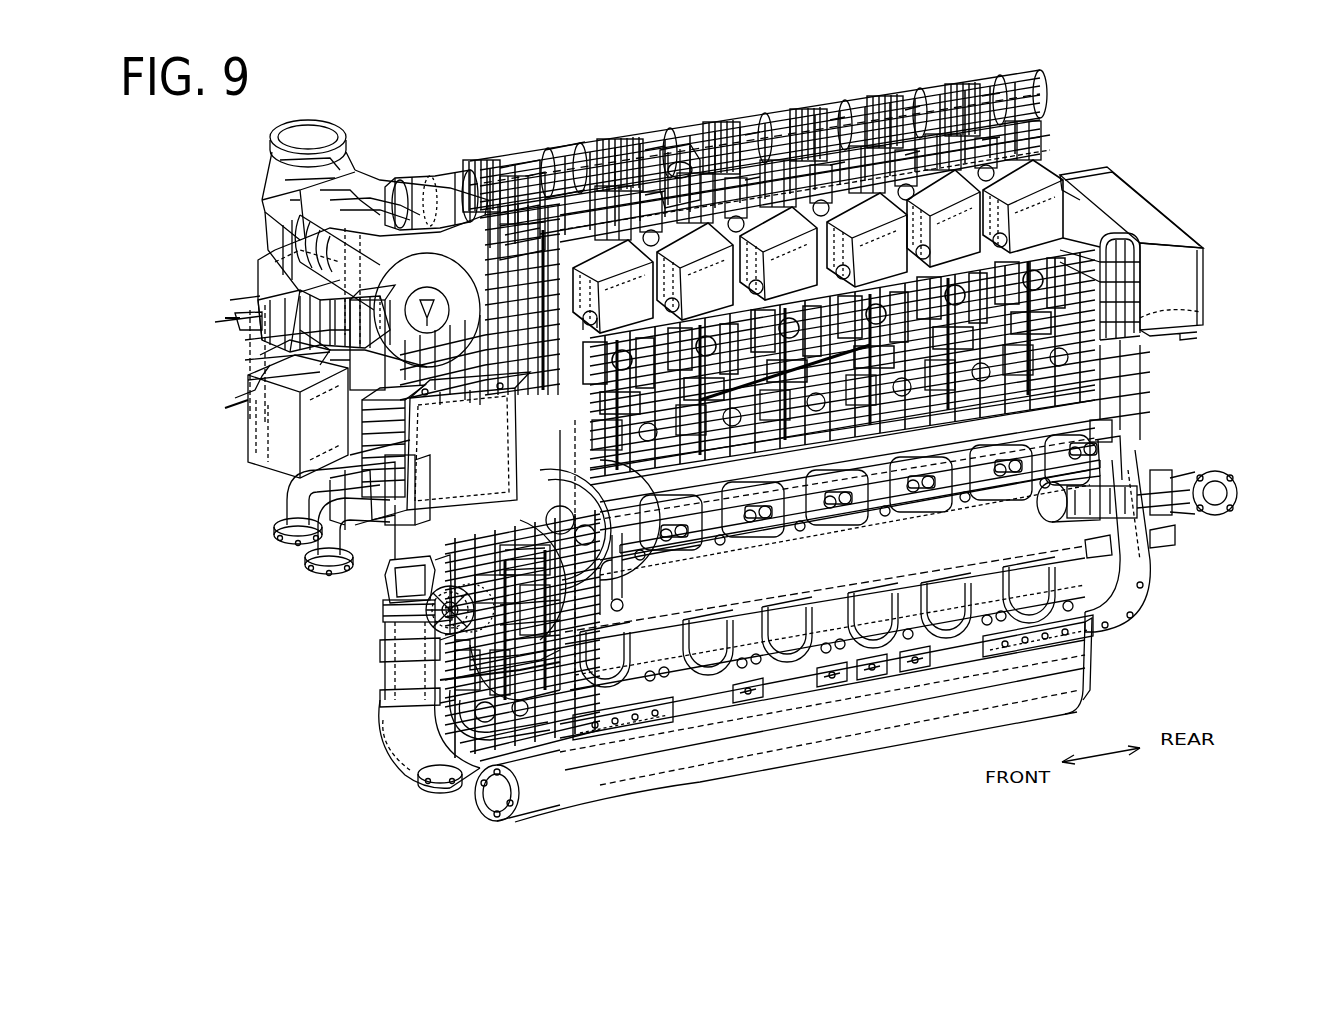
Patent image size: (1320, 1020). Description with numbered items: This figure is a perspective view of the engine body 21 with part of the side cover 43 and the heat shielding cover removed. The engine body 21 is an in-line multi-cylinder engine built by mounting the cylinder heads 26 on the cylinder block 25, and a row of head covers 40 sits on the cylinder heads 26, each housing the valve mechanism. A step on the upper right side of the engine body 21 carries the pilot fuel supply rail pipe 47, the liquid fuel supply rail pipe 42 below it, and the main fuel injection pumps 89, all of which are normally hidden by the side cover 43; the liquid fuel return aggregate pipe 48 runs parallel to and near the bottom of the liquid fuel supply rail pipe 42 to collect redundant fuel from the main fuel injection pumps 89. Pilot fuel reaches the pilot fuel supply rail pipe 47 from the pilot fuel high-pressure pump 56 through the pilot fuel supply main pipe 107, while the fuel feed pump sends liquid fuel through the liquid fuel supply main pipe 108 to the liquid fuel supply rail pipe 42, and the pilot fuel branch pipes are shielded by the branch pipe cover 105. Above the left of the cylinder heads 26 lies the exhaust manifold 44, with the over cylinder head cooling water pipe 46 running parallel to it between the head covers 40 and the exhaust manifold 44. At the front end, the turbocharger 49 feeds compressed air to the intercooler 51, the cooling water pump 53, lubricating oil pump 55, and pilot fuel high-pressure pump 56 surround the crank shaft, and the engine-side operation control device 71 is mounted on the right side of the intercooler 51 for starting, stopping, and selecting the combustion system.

The engine body 21 is at (258, 718).
The cylinder block 25 is at (1097, 570).
The cylinder heads 26 is at (531, 178).
The head covers 40 is at (1043, 186).
The liquid fuel supply rail pipe 42 is at (845, 498).
The side cover 43 is at (1205, 295).
The exhaust manifold 44 is at (512, 178).
The over cylinder head cooling water pipe 46 is at (677, 150).
The pilot fuel supply rail pipe 47 is at (930, 483).
The liquid fuel return aggregate pipe 48 is at (763, 512).
The turbocharger 49 is at (275, 268).
The intercooler 51 is at (272, 440).
The cooling water pump 53 is at (427, 640).
The lubricating oil pump 55 is at (415, 652).
The pilot fuel high-pressure pump 56 is at (412, 712).
The engine-side operation control device 71 is at (392, 525).
The main fuel injection pumps 89 is at (1120, 248).
The branch pipe cover 105 is at (592, 178).
The pilot fuel supply main pipe 107 is at (665, 540).
The liquid fuel supply main pipe 108 is at (638, 557).